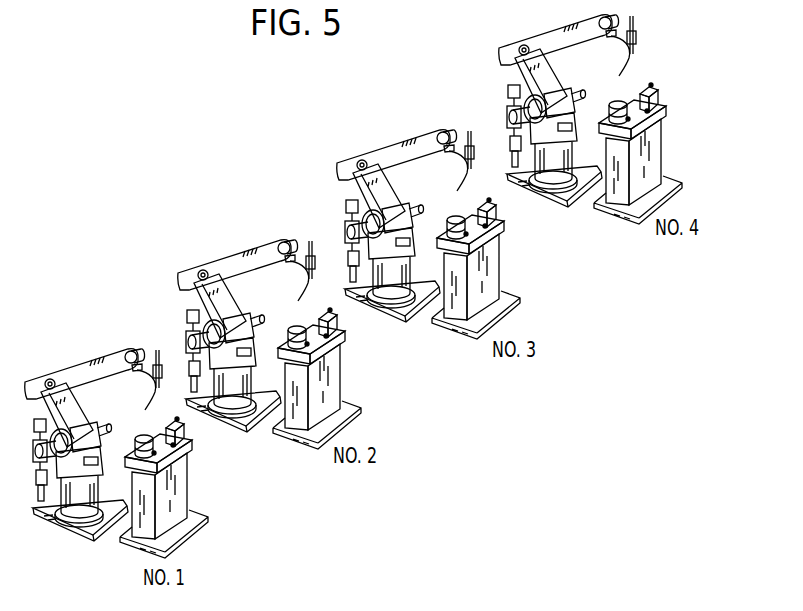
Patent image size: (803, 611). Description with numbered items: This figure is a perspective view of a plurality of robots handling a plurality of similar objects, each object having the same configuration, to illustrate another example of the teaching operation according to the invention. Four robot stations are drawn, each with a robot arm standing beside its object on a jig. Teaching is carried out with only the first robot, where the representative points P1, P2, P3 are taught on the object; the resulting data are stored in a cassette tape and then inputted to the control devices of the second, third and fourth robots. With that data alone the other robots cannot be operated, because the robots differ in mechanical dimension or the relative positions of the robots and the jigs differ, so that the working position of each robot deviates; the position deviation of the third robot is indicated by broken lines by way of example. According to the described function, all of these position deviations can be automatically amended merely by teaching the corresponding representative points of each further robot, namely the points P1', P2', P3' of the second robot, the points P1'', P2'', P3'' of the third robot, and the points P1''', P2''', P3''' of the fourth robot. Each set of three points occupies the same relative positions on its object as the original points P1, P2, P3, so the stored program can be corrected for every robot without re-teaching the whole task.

The representative point P1 is at (141, 410).
The representative point P2 is at (209, 461).
The representative point P3 is at (193, 479).
The representative point P1' is at (297, 303).
The representative point P2' is at (369, 347).
The representative point P3' is at (359, 368).
The representative point P1'' is at (459, 199).
The representative point P2'' is at (529, 240).
The representative point P3'' is at (519, 261).
The representative point P1''' is at (619, 82).
The representative point P2''' is at (689, 127).
The representative point P3''' is at (680, 147).